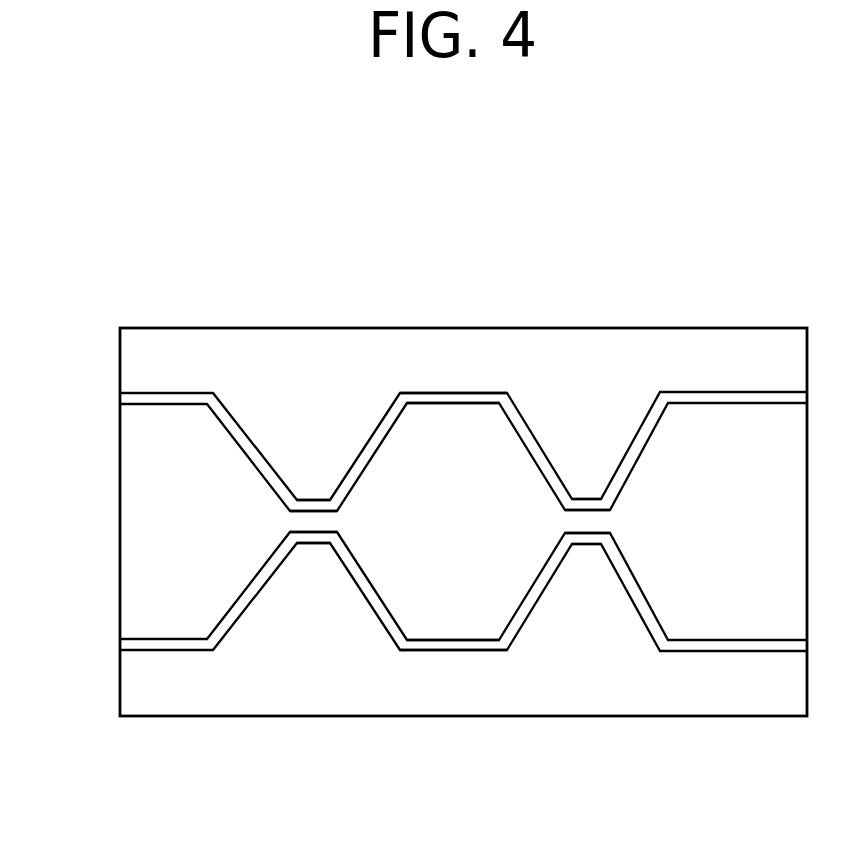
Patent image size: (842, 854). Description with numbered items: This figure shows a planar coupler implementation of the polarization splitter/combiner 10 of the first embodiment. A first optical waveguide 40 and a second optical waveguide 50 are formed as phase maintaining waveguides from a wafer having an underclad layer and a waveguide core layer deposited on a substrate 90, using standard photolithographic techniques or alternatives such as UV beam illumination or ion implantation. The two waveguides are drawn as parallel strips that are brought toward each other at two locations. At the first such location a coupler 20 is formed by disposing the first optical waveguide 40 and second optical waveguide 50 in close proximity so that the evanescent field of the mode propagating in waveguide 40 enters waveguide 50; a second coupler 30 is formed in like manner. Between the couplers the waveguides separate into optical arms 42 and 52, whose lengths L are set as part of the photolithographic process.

The polarization splitter/combiner 10 is at (712, 203).
The coupler 20 is at (307, 522).
The coupler 30 is at (587, 522).
The first optical waveguide 40 is at (182, 393).
The optical arm 42 is at (443, 393).
The second optical waveguide 50 is at (158, 654).
The optical arm 52 is at (448, 653).
The substrate 90 is at (272, 692).